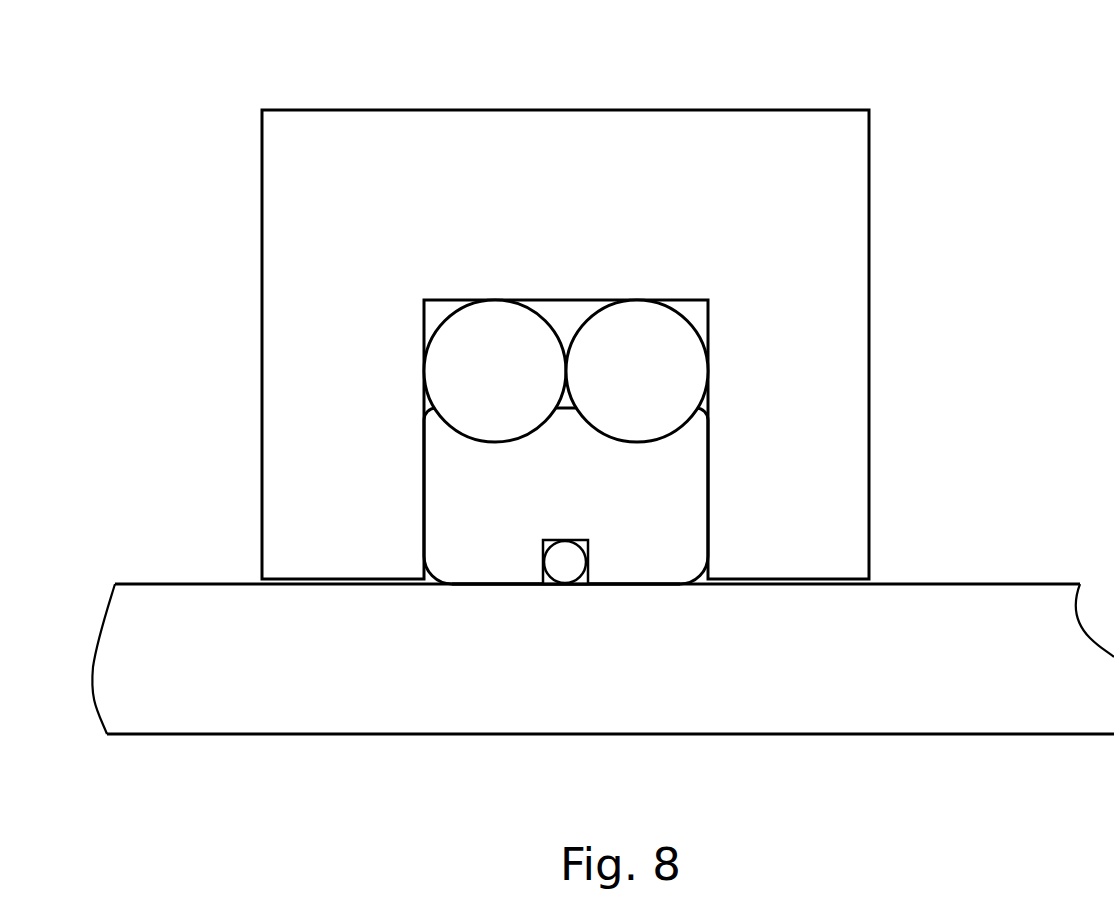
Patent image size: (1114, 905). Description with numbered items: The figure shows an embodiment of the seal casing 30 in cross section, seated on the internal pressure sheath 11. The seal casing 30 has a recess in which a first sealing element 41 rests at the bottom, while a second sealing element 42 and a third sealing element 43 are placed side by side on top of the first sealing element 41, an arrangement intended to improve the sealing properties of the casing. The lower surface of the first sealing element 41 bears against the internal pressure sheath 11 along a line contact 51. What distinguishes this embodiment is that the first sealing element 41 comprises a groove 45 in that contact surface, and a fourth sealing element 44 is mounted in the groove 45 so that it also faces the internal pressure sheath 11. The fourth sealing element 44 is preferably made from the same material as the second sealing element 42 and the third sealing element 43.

The internal pressure sheath 11 is at (935, 735).
The seal casing 30 is at (368, 110).
The first sealing element 41 is at (640, 497).
The second sealing element 42 is at (662, 358).
The third sealing element 43 is at (475, 373).
The fourth sealing element 44 is at (573, 585).
The groove 45 is at (550, 585).
The line contact 51 is at (487, 585).